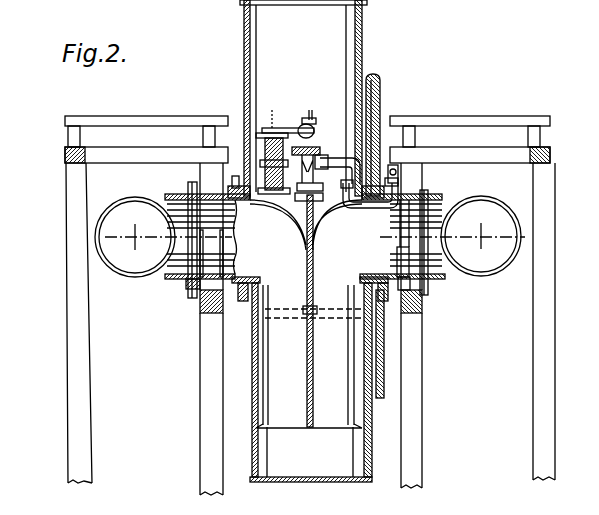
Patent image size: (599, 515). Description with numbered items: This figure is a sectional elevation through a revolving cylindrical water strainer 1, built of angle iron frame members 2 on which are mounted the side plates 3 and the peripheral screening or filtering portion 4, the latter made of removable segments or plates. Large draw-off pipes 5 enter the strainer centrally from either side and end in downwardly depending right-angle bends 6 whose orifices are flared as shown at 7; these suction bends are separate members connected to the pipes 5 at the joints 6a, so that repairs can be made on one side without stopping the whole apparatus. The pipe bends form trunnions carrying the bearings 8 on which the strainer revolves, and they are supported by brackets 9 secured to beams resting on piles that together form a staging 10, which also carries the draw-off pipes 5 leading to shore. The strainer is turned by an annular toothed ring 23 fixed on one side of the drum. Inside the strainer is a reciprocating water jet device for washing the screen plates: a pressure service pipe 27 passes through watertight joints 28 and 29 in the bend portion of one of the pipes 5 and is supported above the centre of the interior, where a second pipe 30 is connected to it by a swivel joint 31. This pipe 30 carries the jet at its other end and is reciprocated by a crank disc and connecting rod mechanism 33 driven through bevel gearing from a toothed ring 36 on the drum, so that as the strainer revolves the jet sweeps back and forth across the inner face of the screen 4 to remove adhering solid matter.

The strainer 1 is at (50, 314).
The angle iron frame members 2 is at (346, 42).
The side plates 3 is at (244, 33).
The screening or filtering portion 4 is at (322, 482).
The pipes 5 is at (110, 232).
The right-angle bends 6 is at (312, 336).
The joints 6a is at (189, 186).
The flared orifices 7 is at (348, 429).
The bearings 8 is at (241, 186).
The brackets 9 is at (188, 281).
The staging 10 is at (201, 390).
The annular toothed ring 23 is at (379, 108).
The pressure service pipe 27 is at (394, 168).
The watertight joint 28 is at (402, 201).
The watertight joint 29 is at (379, 236).
The second pipe 30 is at (313, 133).
The swivel joint 31 is at (235, 236).
The crank disc and connecting rod mechanism 33 is at (287, 128).
The toothed ring 36 is at (256, 340).